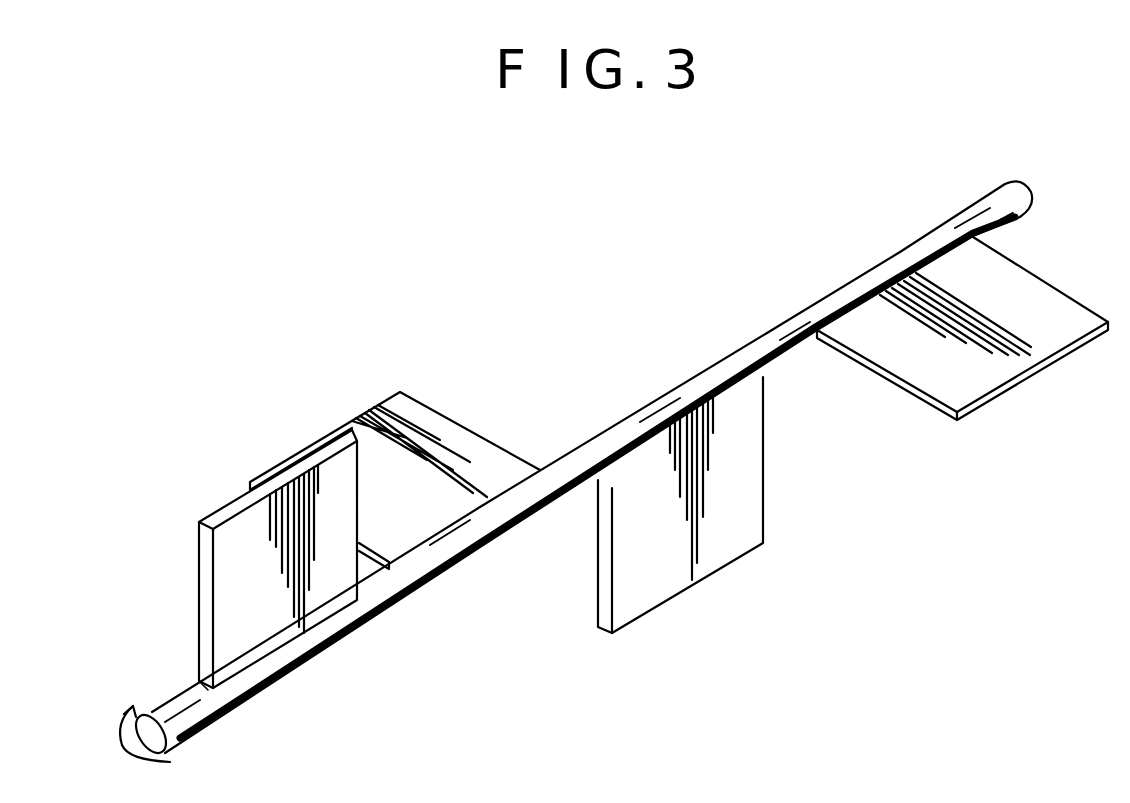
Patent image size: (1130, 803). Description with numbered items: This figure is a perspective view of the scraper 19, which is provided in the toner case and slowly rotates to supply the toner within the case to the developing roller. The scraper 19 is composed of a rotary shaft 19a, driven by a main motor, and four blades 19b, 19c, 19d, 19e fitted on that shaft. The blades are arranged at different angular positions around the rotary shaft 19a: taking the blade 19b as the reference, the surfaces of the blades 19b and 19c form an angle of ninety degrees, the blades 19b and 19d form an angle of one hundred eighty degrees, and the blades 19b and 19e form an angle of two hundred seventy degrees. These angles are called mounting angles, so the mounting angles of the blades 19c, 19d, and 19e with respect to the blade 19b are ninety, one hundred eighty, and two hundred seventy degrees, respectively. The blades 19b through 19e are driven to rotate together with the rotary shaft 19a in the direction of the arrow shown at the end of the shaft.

The scraper 19 is at (540, 577).
The rotary shaft 19a is at (200, 712).
The blade 19b is at (232, 510).
The blade 19c is at (458, 437).
The blade 19d is at (728, 542).
The blade 19e is at (978, 386).